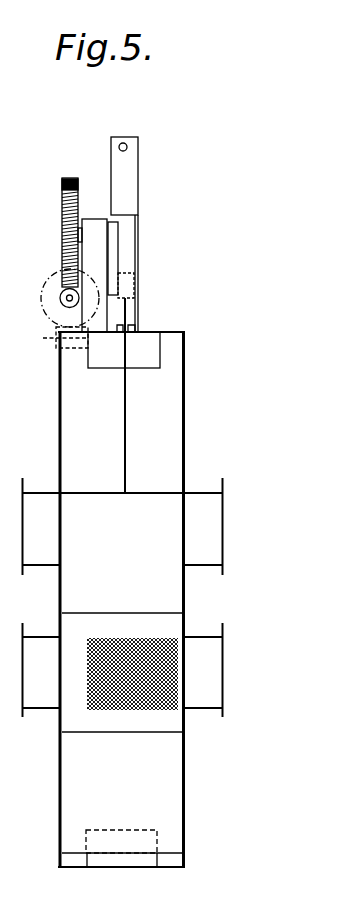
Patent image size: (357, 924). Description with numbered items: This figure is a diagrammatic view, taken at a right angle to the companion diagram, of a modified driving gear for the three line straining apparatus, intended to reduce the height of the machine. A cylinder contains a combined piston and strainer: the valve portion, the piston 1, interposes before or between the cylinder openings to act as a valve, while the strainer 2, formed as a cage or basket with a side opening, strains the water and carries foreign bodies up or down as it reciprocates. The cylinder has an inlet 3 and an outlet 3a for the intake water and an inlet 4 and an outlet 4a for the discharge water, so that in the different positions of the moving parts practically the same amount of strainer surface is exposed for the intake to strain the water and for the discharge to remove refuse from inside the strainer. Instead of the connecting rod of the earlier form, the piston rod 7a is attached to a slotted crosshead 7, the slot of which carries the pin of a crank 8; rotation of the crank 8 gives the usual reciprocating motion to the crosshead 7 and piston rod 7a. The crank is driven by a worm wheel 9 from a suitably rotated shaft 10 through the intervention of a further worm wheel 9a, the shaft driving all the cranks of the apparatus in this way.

The piston 1 is at (122, 599).
The strainer 2 is at (92, 700).
The inlet 3 is at (237, 673).
The outlet 3a is at (10, 672).
The inlet 4 is at (8, 532).
The outlet 4a is at (237, 534).
The slotted crosshead 7 is at (137, 293).
The piston rod 7a is at (127, 437).
The crank 8 is at (112, 257).
The worm wheel 9 is at (62, 215).
The worm wheel 9a is at (60, 294).
The shaft 10 is at (66, 301).